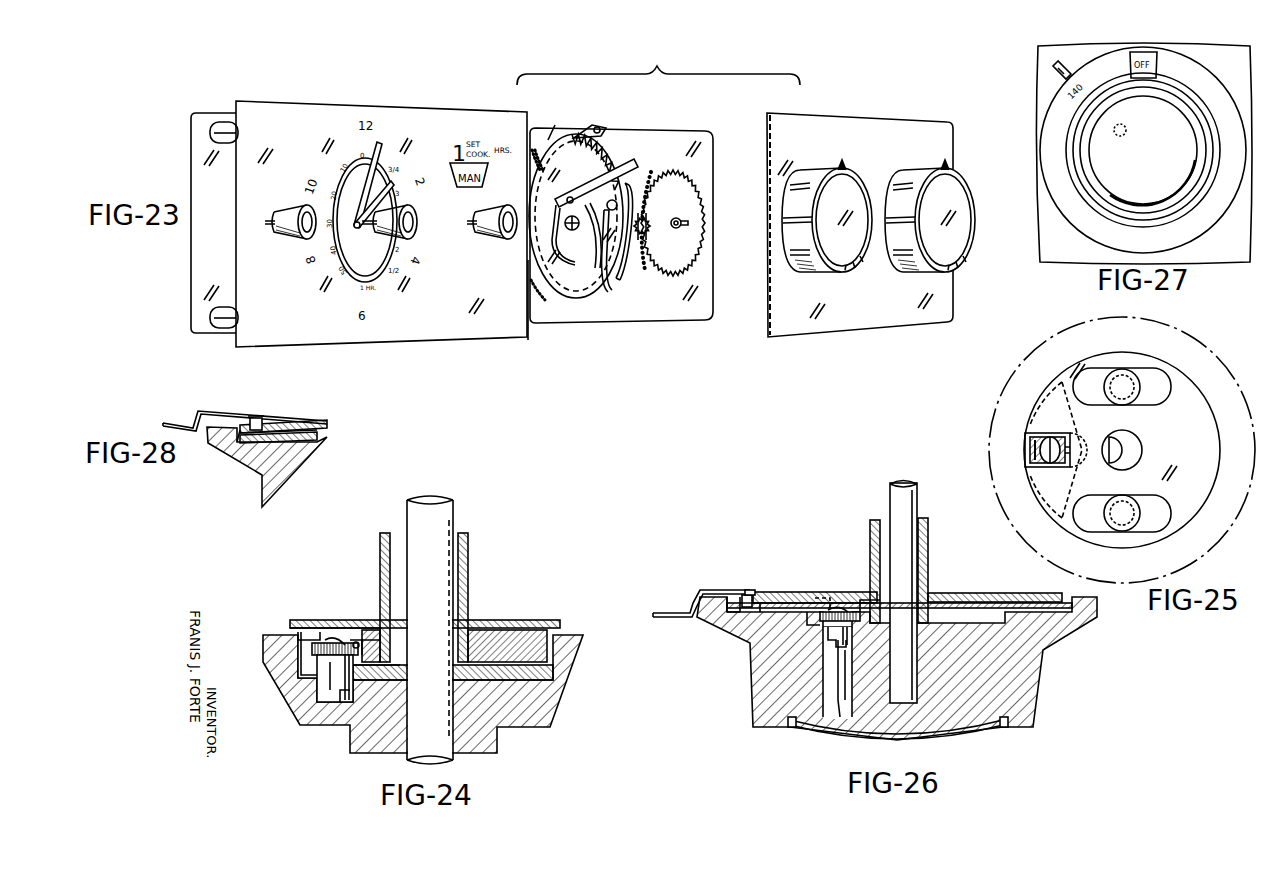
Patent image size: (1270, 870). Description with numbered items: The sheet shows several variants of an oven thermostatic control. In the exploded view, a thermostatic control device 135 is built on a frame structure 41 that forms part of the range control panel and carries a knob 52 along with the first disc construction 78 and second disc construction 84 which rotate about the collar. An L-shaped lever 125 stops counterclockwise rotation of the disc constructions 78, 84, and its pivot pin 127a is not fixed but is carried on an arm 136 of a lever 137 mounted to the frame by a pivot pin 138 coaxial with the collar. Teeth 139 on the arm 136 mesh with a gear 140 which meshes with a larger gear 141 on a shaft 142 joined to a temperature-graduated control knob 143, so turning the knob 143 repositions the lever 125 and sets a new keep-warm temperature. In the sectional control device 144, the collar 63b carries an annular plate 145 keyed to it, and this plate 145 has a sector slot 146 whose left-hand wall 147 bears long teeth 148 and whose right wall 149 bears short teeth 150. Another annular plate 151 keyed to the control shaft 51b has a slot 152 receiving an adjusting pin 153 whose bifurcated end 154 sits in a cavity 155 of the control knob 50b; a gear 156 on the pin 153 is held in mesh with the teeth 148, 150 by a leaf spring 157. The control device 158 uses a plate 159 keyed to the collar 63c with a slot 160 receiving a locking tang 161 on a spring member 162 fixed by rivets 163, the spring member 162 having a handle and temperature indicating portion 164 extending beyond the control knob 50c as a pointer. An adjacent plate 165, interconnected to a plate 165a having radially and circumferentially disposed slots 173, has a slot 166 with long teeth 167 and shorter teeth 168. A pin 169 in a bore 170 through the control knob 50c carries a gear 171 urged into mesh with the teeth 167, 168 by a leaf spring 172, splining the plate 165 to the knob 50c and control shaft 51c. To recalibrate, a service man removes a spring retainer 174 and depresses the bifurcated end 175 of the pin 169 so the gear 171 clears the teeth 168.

In FIG. 23, the frame structure 41 is at (468, 99).
In FIG. 23, the manual set knob 52 is at (487, 228).
In FIG. 23, the first disc construction 78 is at (568, 145).
In FIG. 23, the second disc construction 84 is at (540, 132).
In FIG. 23, the L-shaped lever 125 is at (600, 133).
In FIG. 23, the pivot pin 127a is at (607, 285).
In FIG. 23, the thermostatic control device 135 is at (852, 96).
In FIG. 23, the arm 136 is at (648, 185).
In FIG. 23, the lever 137 is at (622, 175).
In FIG. 23, the pivot pin 138 is at (540, 300).
In FIG. 23, the teeth 139 is at (630, 256).
In FIG. 23, the gear 140 is at (650, 222).
In FIG. 23, the gear 141 is at (700, 196).
In FIG. 23, the shaft 142 is at (690, 225).
In FIG. 23, the control knob 143 is at (966, 206).
In FIG. 25, the control device 144 is at (1224, 352).
In FIG. 24, the control device 144 is at (536, 518).
In FIG. 25, the annular plate 145 is at (1025, 445).
In FIG. 24, the annular plate 145 is at (505, 636).
In FIG. 24, the sector slot 146 is at (362, 630).
In FIG. 24, the left-hand wall 147 is at (297, 628).
In FIG. 25, the long teeth 148 is at (1045, 432).
In FIG. 24, the long teeth 148 is at (305, 640).
In FIG. 24, the right wall 149 is at (357, 640).
In FIG. 25, the short teeth 150 is at (1088, 438).
In FIG. 24, the short teeth 150 is at (390, 664).
In FIG. 25, the annular plate 151 is at (1170, 375).
In FIG. 24, the annular plate 151 is at (540, 672).
In FIG. 25, the slot 152 is at (1040, 445).
In FIG. 24, the slot 152 is at (302, 668).
In FIG. 25, the adjusting pin 153 is at (1035, 455).
In FIG. 24, the adjusting pin 153 is at (322, 680).
In FIG. 25, the bifurcated end 154 is at (1045, 475).
In FIG. 24, the bifurcated end 154 is at (333, 703).
In FIG. 26, the bifurcated end 154 is at (982, 512).
In FIG. 24, the cavity 155 is at (337, 700).
In FIG. 25, the gear 156 is at (1075, 500).
In FIG. 24, the gear 156 is at (332, 640).
In FIG. 26, the gear 156 is at (992, 538).
In FIG. 24, the leaf spring 157 is at (335, 643).
In FIG. 27, the control device 158 is at (1032, 97).
In FIG. 26, the control device 158 is at (848, 492).
In FIG. 28, the control device 158 is at (332, 451).
In FIG. 26, the plate 159 is at (960, 593).
In FIG. 28, the plate 159 is at (310, 436).
In FIG. 26, the slot 160 is at (755, 593).
In FIG. 28, the slot 160 is at (264, 424).
In FIG. 26, the locking tang 161 is at (747, 595).
In FIG. 28, the locking tang 161 is at (257, 418).
In FIG. 26, the spring member 162 is at (790, 592).
In FIG. 28, the spring member 162 is at (300, 425).
In FIG. 26, the rivets 163 is at (822, 596).
In FIG. 27, the handle and temperature indicating portion 164 is at (1054, 67).
In FIG. 26, the handle and temperature indicating portion 164 is at (665, 603).
In FIG. 28, the handle and temperature indicating portion 164 is at (170, 420).
In FIG. 26, the plate 165 is at (975, 605).
In FIG. 26, the plate 165a is at (733, 597).
In FIG. 28, the plate 165a is at (320, 438).
In FIG. 26, the slot 166 is at (863, 600).
In FIG. 26, the long teeth 167 is at (823, 640).
In FIG. 26, the shorter teeth 168 is at (848, 630).
In FIG. 26, the pin 169 is at (830, 652).
In FIG. 26, the bore 170 is at (826, 702).
In FIG. 26, the gear 171 is at (800, 620).
In FIG. 26, the leaf spring 172 is at (838, 608).
In FIG. 26, the slots 173 is at (750, 618).
In FIG. 28, the slots 173 is at (240, 442).
In FIG. 27, the spring retainer 174 is at (1166, 110).
In FIG. 26, the spring retainer 174 is at (950, 737).
In FIG. 27, the bifurcated end 175 is at (1127, 131).
In FIG. 26, the bifurcated end 175 is at (847, 660).
In FIG. 25, the control knob 50b is at (1040, 352).
In FIG. 24, the control knob 50b is at (532, 720).
In FIG. 27, the control knob 50c is at (1062, 202).
In FIG. 26, the control knob 50c is at (768, 705).
In FIG. 28, the control knob 50c is at (262, 480).
In FIG. 25, the control shaft 51b is at (1140, 445).
In FIG. 24, the control shaft 51b is at (445, 516).
In FIG. 26, the control shaft 51c is at (910, 505).
In FIG. 24, the collar 63b is at (382, 545).
In FIG. 26, the collar 63c is at (929, 535).